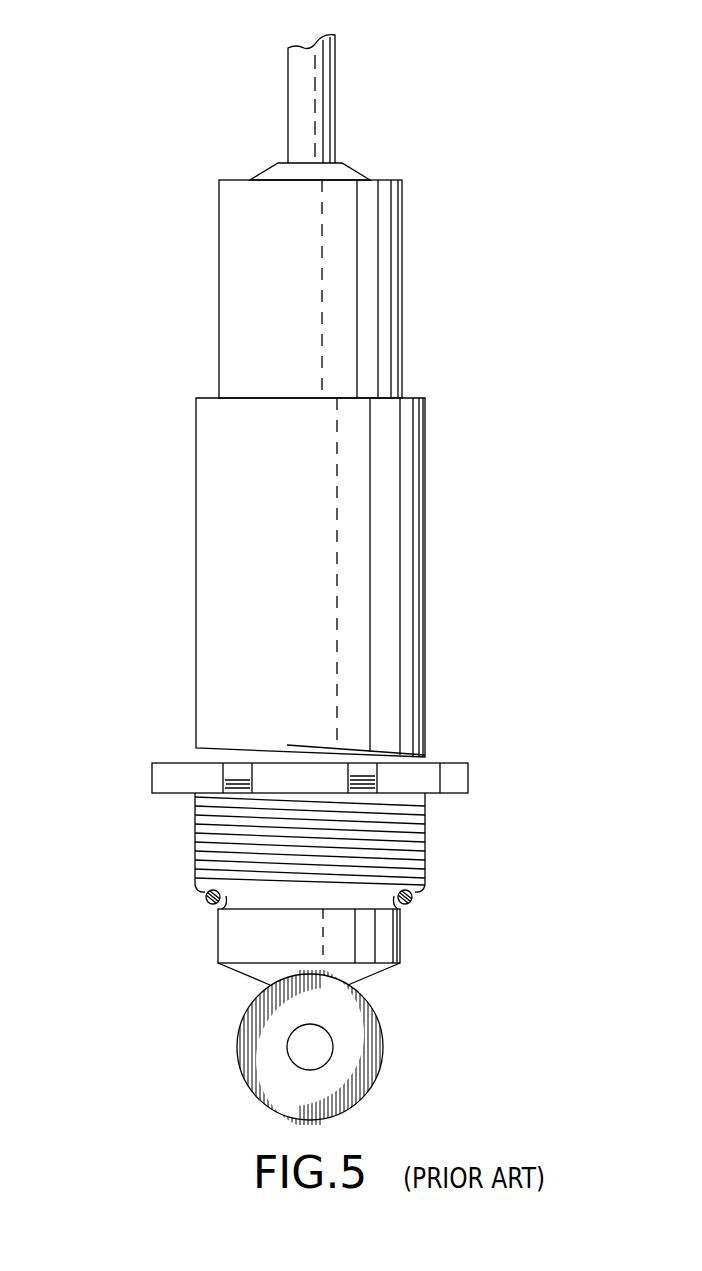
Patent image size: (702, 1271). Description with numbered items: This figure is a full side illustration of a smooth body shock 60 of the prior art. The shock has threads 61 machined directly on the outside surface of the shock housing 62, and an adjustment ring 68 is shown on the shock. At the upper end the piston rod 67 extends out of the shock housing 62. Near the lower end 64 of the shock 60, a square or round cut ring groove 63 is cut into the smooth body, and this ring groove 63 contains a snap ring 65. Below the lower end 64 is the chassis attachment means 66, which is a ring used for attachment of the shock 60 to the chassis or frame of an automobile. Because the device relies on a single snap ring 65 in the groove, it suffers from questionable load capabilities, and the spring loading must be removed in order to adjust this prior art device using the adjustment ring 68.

The smooth body shock 60 is at (219, 283).
The threads 61 is at (425, 847).
The shock housing 62 is at (425, 664).
The ring groove 63 is at (218, 910).
The lower end 64 is at (438, 913).
The snap ring 65 is at (206, 897).
The chassis attachment means 66 is at (237, 1047).
The piston rod 67 is at (335, 100).
The adjustment ring 68 is at (152, 772).